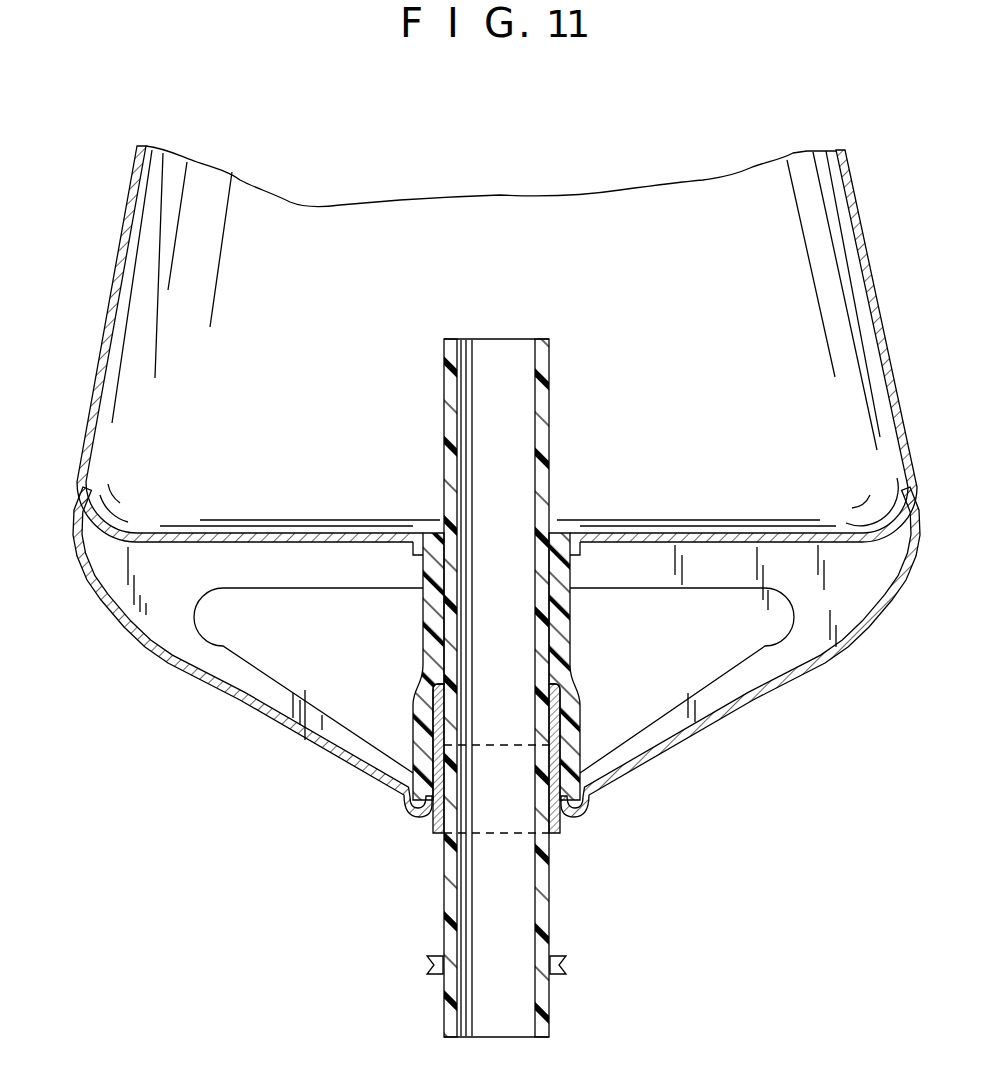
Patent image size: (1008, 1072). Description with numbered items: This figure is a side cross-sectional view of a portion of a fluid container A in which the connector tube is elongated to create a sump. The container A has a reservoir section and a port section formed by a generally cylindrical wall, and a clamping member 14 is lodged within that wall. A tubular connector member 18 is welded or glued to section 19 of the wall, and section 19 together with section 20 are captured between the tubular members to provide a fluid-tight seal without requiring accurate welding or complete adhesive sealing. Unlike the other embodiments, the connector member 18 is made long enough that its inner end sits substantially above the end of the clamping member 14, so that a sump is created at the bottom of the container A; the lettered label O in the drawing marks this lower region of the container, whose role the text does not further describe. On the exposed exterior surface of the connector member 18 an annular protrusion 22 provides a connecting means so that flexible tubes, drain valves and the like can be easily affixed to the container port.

The fluid container A is at (115, 228).
The container opening interior O is at (113, 433).
The clamping member 14 is at (567, 607).
The connector member 18 is at (540, 912).
The section of wall 19 is at (437, 762).
The section 20 is at (433, 727).
The annular protrusion 22 is at (566, 962).